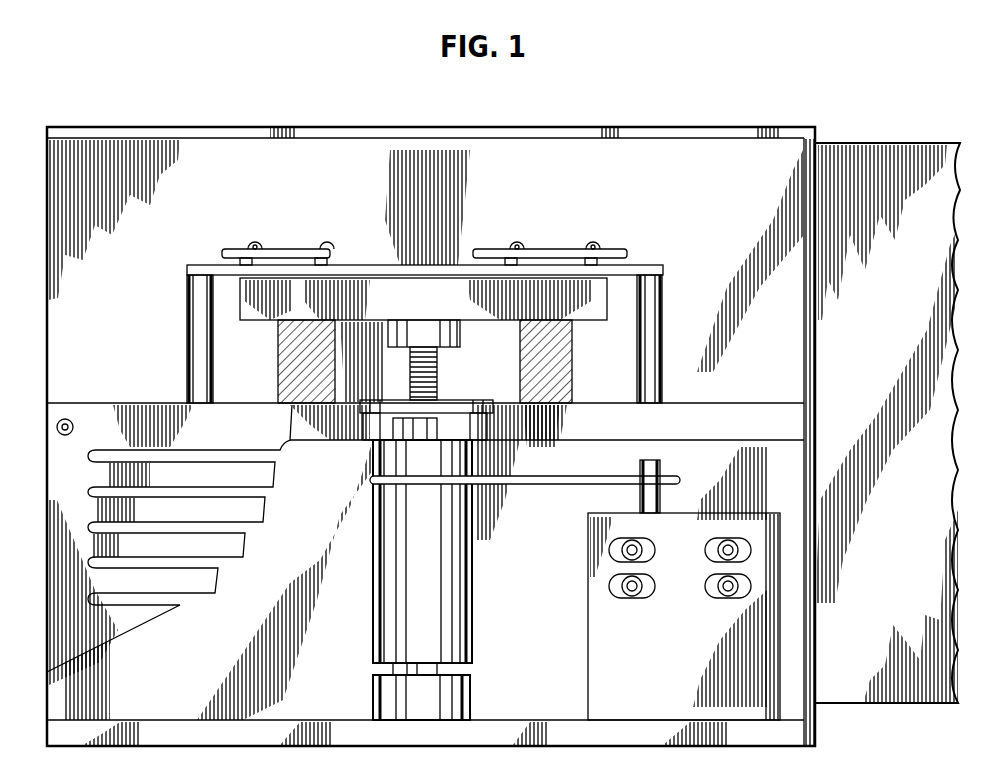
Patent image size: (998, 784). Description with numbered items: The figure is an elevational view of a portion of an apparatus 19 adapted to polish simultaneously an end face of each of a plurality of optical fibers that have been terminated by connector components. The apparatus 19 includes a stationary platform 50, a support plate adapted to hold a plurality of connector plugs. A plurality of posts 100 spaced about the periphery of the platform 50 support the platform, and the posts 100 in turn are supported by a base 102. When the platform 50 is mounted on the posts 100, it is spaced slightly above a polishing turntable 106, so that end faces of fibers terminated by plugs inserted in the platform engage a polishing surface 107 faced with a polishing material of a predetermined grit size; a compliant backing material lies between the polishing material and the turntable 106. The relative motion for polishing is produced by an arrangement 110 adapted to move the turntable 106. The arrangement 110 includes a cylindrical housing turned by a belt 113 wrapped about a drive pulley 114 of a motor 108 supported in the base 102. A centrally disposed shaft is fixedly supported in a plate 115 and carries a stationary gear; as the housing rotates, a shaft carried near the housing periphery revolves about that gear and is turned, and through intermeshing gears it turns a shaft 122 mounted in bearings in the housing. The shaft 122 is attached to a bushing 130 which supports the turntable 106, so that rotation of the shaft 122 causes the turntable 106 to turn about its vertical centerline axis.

The apparatus 19 is at (752, 101).
The platform 50 is at (642, 265).
The posts 100 is at (192, 305).
The base 102 is at (96, 403).
The polishing turntable 106 is at (228, 293).
The polishing surface 107 is at (292, 268).
The motor 108 is at (627, 654).
The arrangement 110 is at (485, 620).
The belt 113 is at (557, 486).
The drive pulley 114 is at (672, 478).
The plate 115 is at (468, 691).
The shaft 122 is at (427, 402).
The bushing 130 is at (423, 336).